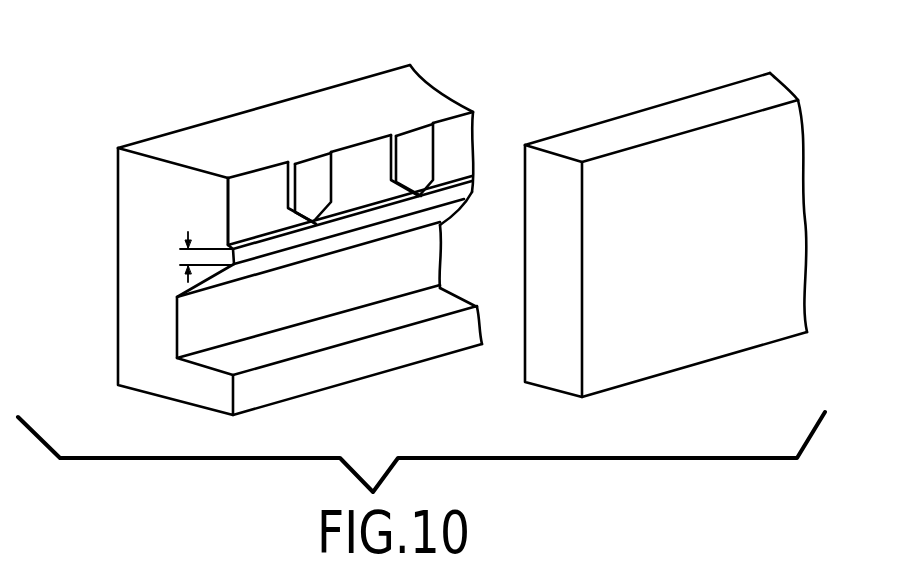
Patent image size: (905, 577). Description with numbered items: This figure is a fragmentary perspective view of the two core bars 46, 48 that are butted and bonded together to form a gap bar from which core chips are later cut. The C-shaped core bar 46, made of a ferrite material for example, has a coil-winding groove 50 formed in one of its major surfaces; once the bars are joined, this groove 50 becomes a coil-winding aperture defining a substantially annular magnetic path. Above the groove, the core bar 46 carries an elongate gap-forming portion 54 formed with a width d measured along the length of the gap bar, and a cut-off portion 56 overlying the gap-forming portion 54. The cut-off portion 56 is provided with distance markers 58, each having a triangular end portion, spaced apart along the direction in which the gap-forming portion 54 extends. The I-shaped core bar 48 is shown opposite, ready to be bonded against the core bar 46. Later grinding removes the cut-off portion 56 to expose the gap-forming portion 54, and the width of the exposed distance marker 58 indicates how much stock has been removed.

The core bar 46 is at (112, 182).
The core bar 48 is at (712, 88).
The coil-winding groove 50 is at (202, 327).
The gap-forming portion 54 is at (462, 193).
The cut-off portion 56 is at (225, 180).
The distance markers 58 is at (313, 173).